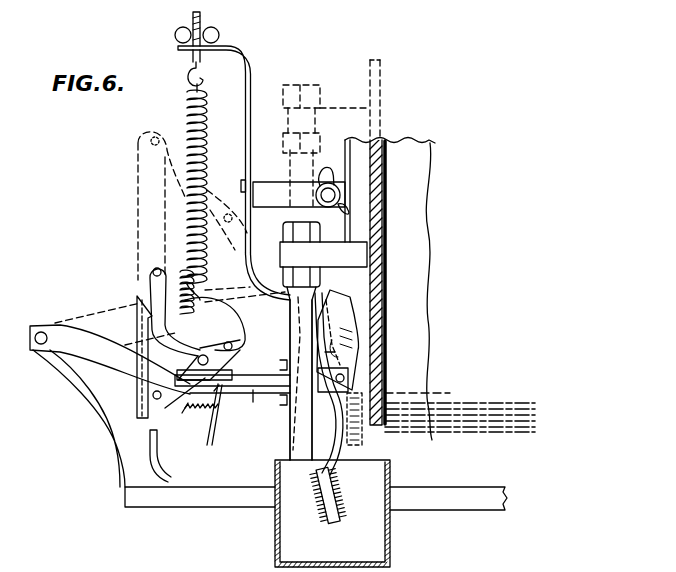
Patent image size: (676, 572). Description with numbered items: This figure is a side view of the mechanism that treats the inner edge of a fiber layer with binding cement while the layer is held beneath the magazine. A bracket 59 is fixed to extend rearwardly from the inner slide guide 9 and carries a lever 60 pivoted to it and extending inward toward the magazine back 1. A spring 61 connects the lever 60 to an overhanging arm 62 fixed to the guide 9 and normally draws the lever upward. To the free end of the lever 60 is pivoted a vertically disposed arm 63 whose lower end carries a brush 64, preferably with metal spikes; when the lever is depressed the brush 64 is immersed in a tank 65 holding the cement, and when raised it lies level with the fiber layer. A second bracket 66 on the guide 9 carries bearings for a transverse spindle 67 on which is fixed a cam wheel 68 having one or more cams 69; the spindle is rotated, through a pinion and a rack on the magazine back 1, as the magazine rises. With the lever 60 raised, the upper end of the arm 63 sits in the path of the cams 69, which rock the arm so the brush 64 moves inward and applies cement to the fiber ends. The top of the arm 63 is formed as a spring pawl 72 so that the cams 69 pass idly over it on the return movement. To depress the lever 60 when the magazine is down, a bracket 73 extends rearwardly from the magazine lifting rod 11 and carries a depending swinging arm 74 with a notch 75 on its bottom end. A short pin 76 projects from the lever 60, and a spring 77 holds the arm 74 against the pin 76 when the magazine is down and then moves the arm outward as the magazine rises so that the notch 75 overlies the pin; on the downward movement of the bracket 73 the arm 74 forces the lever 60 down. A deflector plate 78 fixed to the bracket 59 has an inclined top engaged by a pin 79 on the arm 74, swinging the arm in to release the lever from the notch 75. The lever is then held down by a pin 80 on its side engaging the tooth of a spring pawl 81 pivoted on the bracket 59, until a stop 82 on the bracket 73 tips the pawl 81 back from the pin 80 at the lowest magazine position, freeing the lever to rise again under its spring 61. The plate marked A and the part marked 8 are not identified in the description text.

The magazine back 1 is at (376, 291).
The spring 8 is at (330, 346).
The inner slide guide 9 is at (323, 341).
The magazine lifting rod 11 is at (303, 380).
The bracket 59 is at (50, 351).
The lever 60 is at (357, 367).
The spring 61 is at (207, 181).
The overhanging arm 62 is at (232, 48).
The arm 63 is at (350, 398).
The brush 64 is at (338, 501).
The tank 65 is at (391, 540).
The second bracket 66 is at (257, 282).
The transverse spindle 67 is at (303, 183).
The cam wheel 68 is at (337, 186).
The cams 69 is at (340, 205).
The spring pawl 72 is at (350, 312).
The bracket 73 is at (148, 280).
The swinging arm 74 is at (148, 287).
The notch 75 is at (150, 438).
The short pin 76 is at (145, 350).
The spring 77 is at (183, 271).
The deflector plate 78 is at (140, 330).
The pin 79 is at (154, 398).
The pin 80 is at (204, 366).
The spring pawl 81 is at (224, 386).
The stop 82 is at (232, 352).
The plate A is at (147, 506).